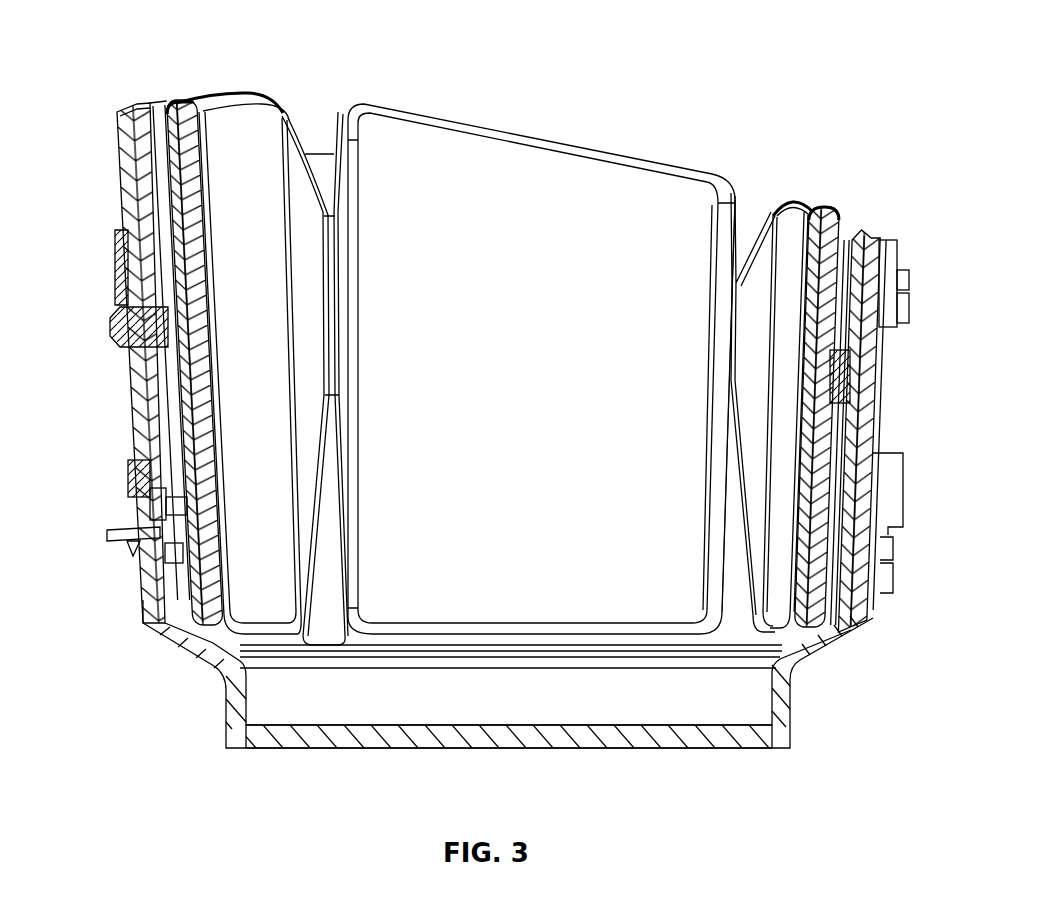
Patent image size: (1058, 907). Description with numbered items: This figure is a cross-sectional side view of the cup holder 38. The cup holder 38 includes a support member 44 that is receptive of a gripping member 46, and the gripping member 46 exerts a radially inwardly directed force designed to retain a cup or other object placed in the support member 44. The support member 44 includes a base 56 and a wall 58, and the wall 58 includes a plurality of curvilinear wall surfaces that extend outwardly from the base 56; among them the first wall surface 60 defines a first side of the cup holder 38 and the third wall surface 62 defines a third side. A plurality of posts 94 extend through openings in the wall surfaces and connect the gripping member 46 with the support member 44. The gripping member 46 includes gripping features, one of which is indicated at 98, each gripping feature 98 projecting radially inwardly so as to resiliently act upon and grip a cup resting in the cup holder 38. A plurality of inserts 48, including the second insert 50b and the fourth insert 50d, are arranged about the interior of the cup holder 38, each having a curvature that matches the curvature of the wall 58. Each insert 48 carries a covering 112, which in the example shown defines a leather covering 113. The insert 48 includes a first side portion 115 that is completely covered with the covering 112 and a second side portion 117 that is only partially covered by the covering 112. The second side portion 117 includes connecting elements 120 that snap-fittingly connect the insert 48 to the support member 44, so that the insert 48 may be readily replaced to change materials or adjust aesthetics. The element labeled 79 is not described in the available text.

The cup holder 38 is at (866, 697).
The support member 44 is at (115, 132).
The gripping member 46 is at (172, 588).
The inserts 48 is at (250, 607).
The second insert 50b is at (789, 272).
The fourth insert 50d is at (226, 128).
The base 56 is at (388, 725).
The wall 58 is at (137, 104).
The first wall surface 60 is at (120, 178).
The third wall surface 62 is at (881, 358).
The insert 79 is at (159, 120).
The posts 94 is at (903, 284).
The gripping feature 98 is at (315, 132).
The covering 112 is at (188, 103).
The leather covering 113 is at (723, 187).
The first side portion 115 is at (230, 330).
The second side portion 117 is at (185, 400).
The connecting elements 120 is at (110, 328).